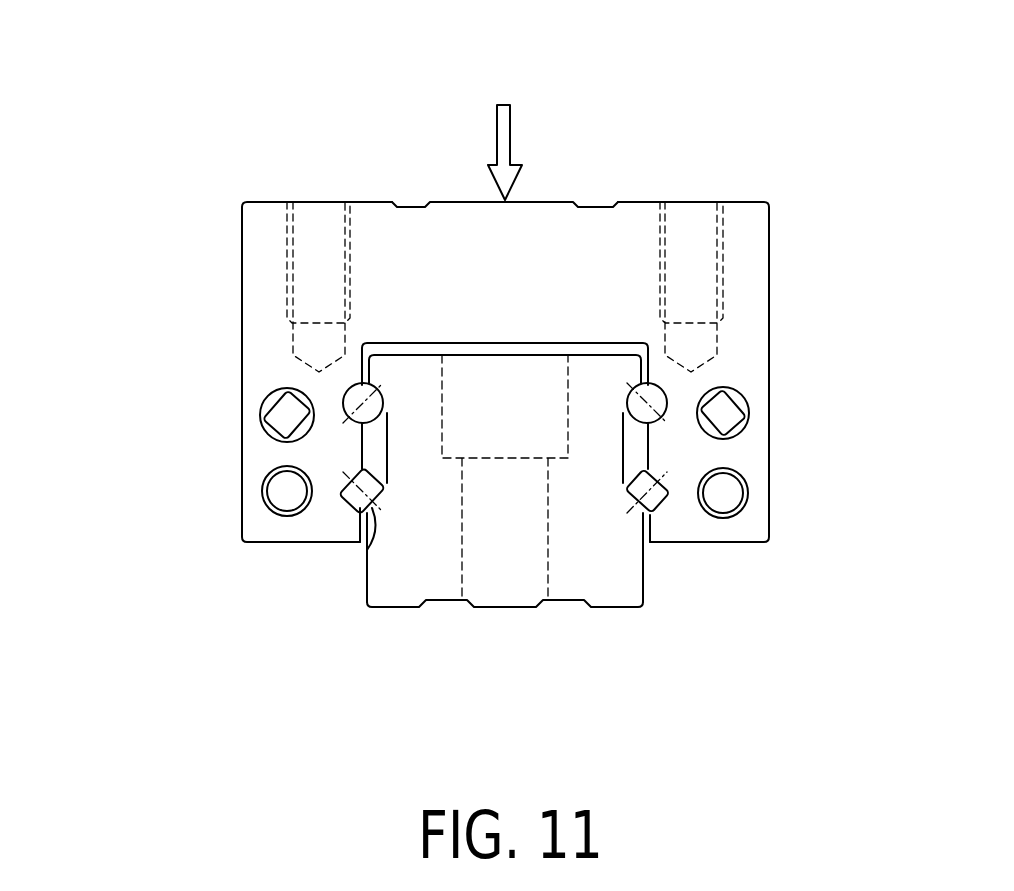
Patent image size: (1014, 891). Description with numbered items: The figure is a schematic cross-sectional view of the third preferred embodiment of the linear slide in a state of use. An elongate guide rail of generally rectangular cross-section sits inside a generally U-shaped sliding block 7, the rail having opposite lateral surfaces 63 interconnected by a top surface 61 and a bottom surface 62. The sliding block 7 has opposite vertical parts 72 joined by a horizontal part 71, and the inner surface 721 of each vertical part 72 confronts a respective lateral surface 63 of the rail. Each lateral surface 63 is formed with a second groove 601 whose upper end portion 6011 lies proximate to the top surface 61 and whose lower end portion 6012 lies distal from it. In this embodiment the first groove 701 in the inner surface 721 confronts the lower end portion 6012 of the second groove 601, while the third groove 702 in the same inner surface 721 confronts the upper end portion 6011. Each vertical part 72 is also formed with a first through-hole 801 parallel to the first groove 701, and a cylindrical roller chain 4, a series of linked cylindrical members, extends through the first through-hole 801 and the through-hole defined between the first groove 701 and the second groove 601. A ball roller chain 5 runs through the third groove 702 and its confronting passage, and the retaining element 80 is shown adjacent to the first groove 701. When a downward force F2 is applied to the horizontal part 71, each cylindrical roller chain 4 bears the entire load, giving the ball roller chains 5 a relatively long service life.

The sliding block 7 is at (790, 212).
The horizontal part 71 is at (538, 230).
The third groove 702 is at (355, 387).
The inner surface 721 is at (362, 448).
The vertical part 72 is at (262, 490).
The first through-hole 801 is at (281, 388).
The cylindrical roller chain 4 is at (258, 386).
The ball roller chain 5 is at (248, 512).
The retainer 80 is at (347, 480).
The first groove 701 is at (340, 495).
The upper end portion 6011 is at (389, 385).
The top surface 61 is at (423, 353).
The bottom surface 62 is at (397, 607).
The lateral surface 63 is at (367, 580).
The second groove 601 is at (383, 452).
The lower end portion 6012 is at (366, 548).
The downward force F2 is at (497, 127).